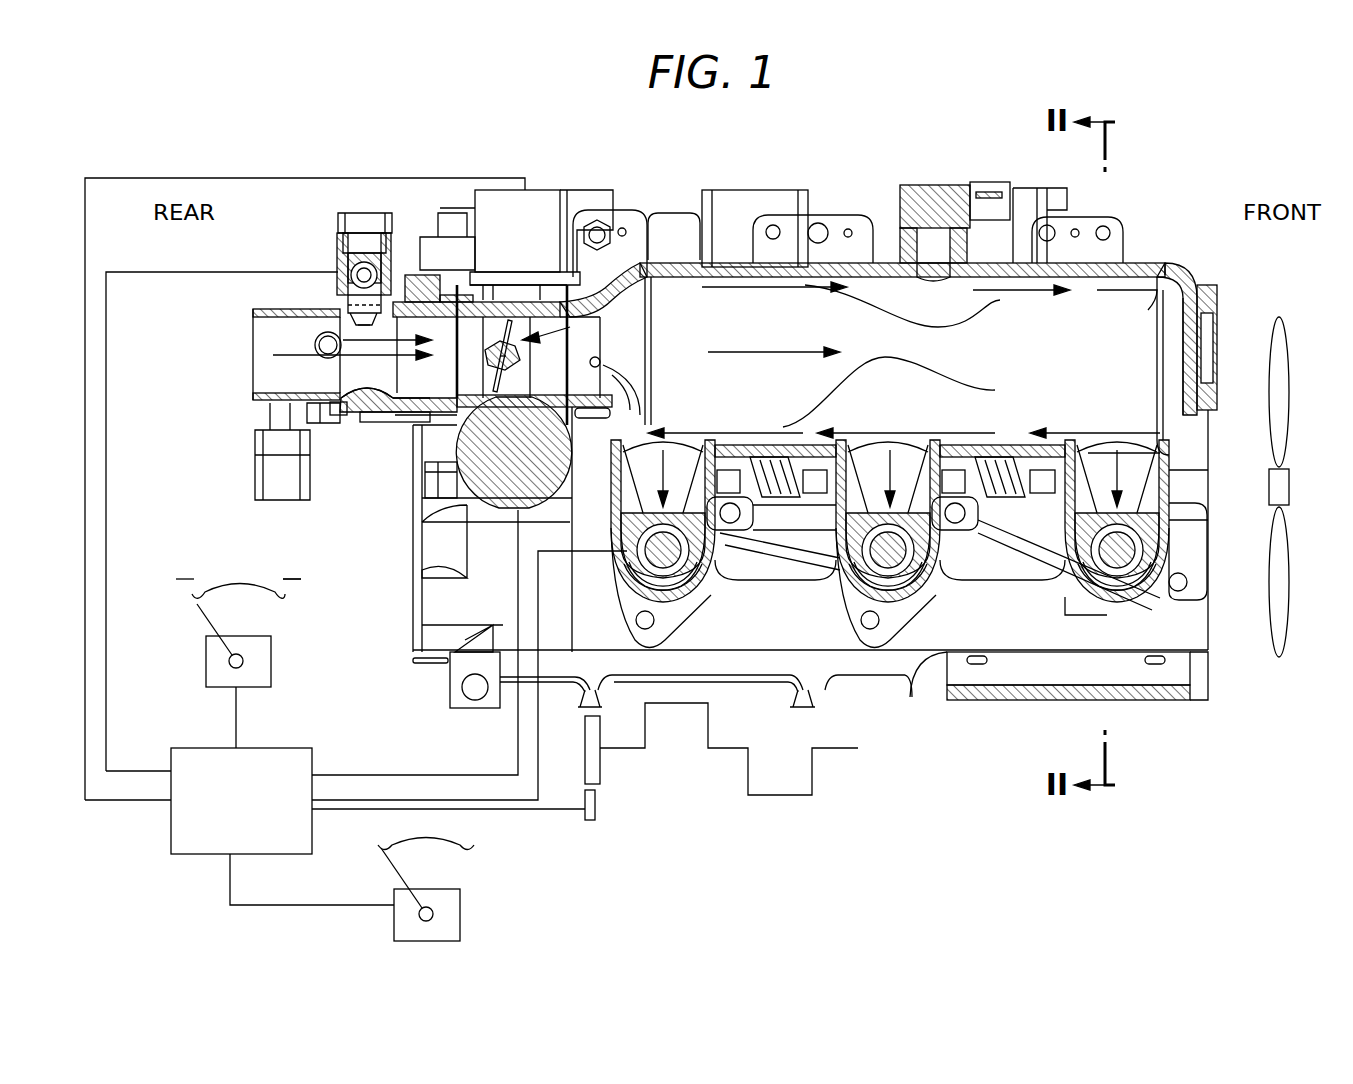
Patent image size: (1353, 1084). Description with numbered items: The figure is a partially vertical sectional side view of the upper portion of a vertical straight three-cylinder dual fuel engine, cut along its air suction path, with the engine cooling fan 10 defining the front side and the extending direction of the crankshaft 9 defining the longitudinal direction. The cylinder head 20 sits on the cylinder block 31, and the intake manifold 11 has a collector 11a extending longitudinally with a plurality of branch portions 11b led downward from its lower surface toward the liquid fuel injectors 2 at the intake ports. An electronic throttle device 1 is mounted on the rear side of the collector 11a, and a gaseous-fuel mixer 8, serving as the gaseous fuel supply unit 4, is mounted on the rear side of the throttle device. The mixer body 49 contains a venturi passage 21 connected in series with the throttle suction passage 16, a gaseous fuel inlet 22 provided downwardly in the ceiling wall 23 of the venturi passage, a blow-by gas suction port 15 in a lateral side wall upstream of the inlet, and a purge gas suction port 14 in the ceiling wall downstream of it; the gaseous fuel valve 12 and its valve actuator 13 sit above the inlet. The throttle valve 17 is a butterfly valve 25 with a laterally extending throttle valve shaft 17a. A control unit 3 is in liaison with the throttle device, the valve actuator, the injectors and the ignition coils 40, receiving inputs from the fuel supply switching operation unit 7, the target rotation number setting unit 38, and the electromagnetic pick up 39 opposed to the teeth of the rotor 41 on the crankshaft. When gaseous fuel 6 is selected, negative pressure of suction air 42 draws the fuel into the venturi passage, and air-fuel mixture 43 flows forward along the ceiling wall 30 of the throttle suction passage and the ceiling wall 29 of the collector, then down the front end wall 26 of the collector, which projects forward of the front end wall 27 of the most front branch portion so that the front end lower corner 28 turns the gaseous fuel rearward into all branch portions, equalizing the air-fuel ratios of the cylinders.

The electronic throttle device 1 is at (507, 255).
The liquid fuel injector 2 is at (666, 555).
The control unit 3 is at (203, 854).
The gaseous fuel supply unit 4 is at (284, 244).
The gaseous-fuel mixer 8 is at (325, 264).
The gaseous fuel 6 is at (410, 337).
The fuel supply switching operation unit 7 is at (271, 667).
The crankshaft 9 is at (850, 748).
The engine cooling fan 10 is at (1279, 657).
The intake manifold 11 is at (1146, 238).
The collector 11a is at (1160, 268).
The branch portion 11b is at (680, 470).
The gaseous fuel valve 12 is at (363, 213).
The valve actuator 13 is at (313, 229).
The purge gas suction port 14 is at (405, 300).
The blow-by gas suction port 15 is at (316, 342).
The throttle suction passage 16 is at (523, 323).
The throttle valve 17 is at (608, 352).
The butterfly valve 25 is at (570, 327).
The throttle valve shaft 17a is at (517, 352).
The cylinder head 20 is at (1131, 637).
The venturi passage 21 is at (377, 398).
The gaseous fuel inlet 22 is at (357, 403).
The ceiling wall 23 is at (350, 317).
The front end wall 26 is at (1185, 407).
The front end wall 27 is at (1112, 500).
The front end lower corner 28 is at (1173, 447).
The ceiling wall 29 is at (677, 265).
The ceiling wall 30 is at (472, 300).
The cylinder block 31 is at (1205, 687).
The target rotation number setting unit 38 is at (460, 921).
The electromagnetic pick up 39 is at (595, 807).
The ignition coil 40 is at (548, 200).
The rotor 41 is at (600, 770).
The suction air 42 is at (277, 353).
The air-fuel mixture 43 is at (790, 350).
The mixer body 49 is at (395, 400).